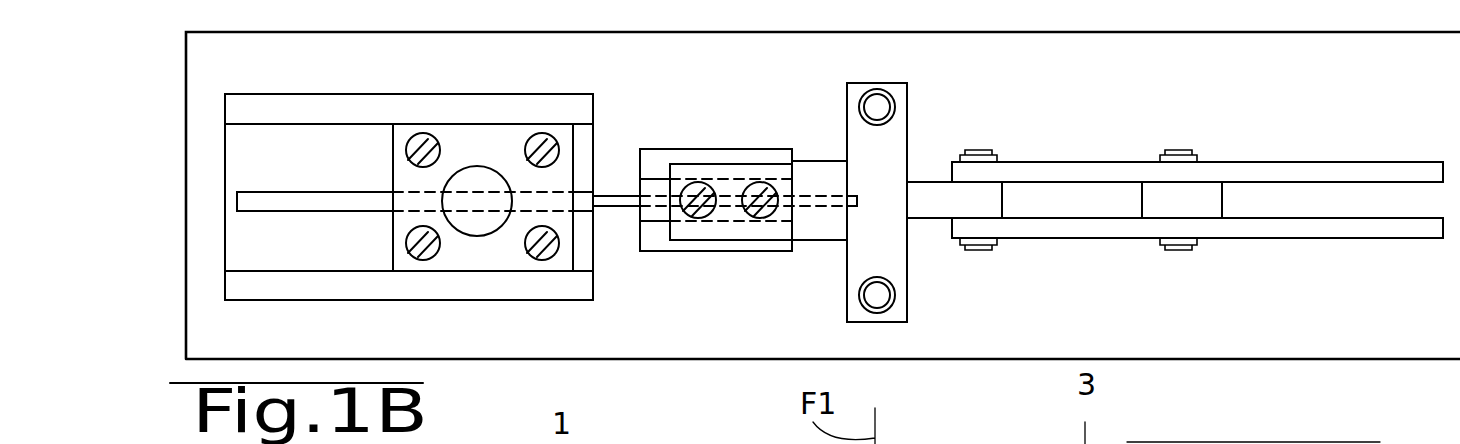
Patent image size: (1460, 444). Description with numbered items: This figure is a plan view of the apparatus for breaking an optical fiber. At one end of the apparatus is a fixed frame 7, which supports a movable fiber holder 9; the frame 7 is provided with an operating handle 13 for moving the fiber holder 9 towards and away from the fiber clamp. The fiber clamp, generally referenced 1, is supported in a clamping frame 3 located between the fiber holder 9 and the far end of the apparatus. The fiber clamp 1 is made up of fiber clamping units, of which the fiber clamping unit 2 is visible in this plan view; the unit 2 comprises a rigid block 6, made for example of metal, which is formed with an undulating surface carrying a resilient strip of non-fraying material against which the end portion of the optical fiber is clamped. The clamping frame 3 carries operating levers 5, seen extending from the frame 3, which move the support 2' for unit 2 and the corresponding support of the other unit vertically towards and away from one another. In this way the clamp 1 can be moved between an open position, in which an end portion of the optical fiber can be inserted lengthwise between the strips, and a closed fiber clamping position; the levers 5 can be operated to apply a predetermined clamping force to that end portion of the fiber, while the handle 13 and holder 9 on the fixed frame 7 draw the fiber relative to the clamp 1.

The fiber clamp 1 is at (722, 133).
The fiber clamping unit 2 is at (801, 162).
The support 2' is at (765, 179).
The clamping frame 3 is at (920, 137).
The operating levers 5 is at (1258, 170).
The rigid block 6 is at (708, 242).
The fixed frame 7 is at (313, 257).
The movable fiber holder 9 is at (514, 115).
The operating handle 13 is at (492, 212).